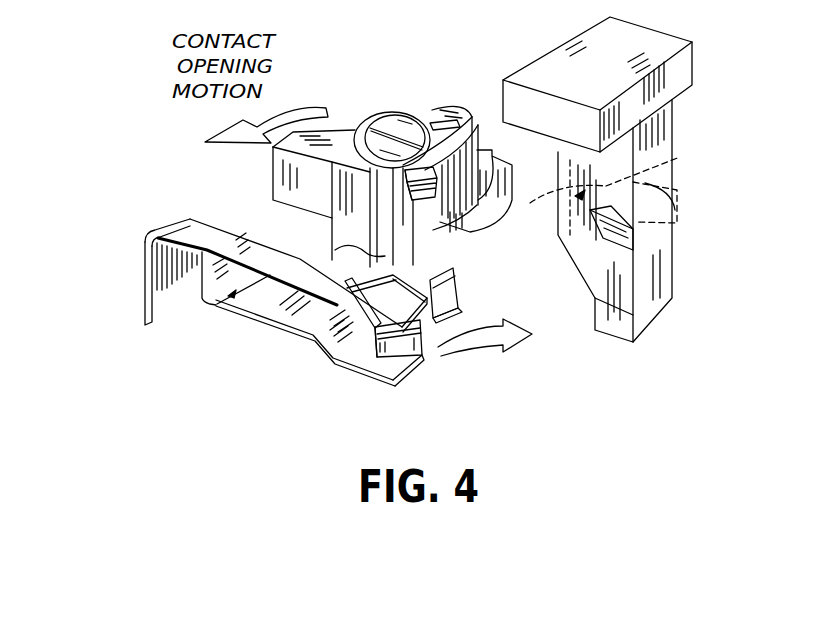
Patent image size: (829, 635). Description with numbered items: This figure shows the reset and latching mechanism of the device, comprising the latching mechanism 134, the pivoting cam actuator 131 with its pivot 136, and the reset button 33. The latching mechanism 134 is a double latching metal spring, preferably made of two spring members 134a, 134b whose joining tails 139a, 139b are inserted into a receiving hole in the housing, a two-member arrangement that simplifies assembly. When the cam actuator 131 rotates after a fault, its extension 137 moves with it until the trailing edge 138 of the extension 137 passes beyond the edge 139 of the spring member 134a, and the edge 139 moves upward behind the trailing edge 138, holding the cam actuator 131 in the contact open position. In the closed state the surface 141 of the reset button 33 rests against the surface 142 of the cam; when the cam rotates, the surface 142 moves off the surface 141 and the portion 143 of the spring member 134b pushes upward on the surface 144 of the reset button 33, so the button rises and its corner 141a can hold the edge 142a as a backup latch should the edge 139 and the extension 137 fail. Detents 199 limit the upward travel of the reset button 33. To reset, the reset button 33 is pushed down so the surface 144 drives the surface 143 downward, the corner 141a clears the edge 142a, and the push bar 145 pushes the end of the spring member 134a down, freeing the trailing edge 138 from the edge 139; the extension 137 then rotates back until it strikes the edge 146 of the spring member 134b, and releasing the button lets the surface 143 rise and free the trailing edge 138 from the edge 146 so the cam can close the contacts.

The reset button 33 is at (587, 31).
The pivoting cam actuator 131 is at (391, 108).
The latching mechanism 134 is at (130, 301).
The spring member 134a is at (273, 327).
The spring member 134b is at (162, 226).
The pivot ring / screw head 136 is at (405, 126).
The extension 137 is at (415, 354).
The trailing edge 138 is at (362, 322).
The edge 139 is at (436, 324).
The joining tail 139a is at (180, 314).
The joining tail 139b is at (147, 318).
The surface 141 is at (559, 207).
The corner 141a is at (667, 185).
The surface 142 is at (434, 202).
The edge 142a is at (405, 190).
The portion 143 is at (447, 284).
The surface 144 is at (650, 319).
The push bar 145 is at (455, 304).
The edge 146 is at (396, 278).
The detents 199 is at (636, 236).